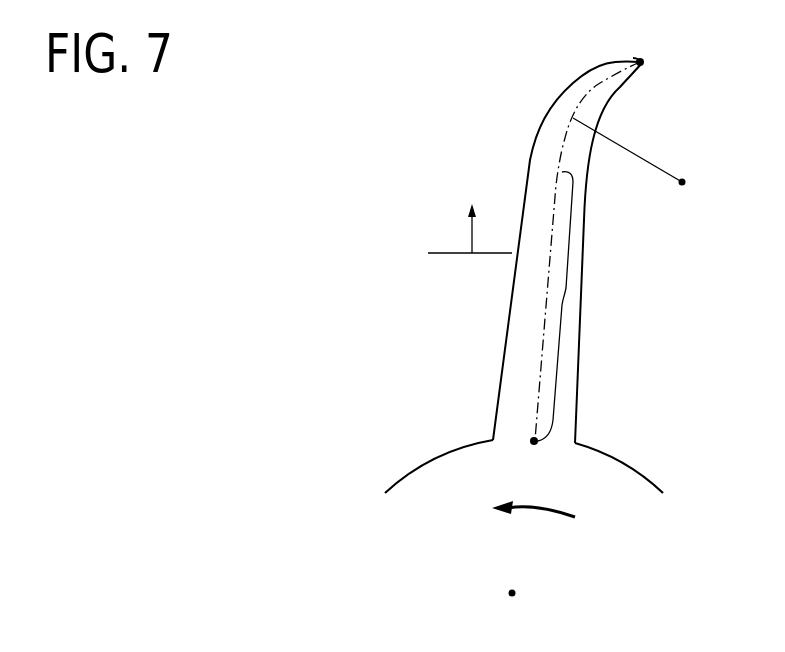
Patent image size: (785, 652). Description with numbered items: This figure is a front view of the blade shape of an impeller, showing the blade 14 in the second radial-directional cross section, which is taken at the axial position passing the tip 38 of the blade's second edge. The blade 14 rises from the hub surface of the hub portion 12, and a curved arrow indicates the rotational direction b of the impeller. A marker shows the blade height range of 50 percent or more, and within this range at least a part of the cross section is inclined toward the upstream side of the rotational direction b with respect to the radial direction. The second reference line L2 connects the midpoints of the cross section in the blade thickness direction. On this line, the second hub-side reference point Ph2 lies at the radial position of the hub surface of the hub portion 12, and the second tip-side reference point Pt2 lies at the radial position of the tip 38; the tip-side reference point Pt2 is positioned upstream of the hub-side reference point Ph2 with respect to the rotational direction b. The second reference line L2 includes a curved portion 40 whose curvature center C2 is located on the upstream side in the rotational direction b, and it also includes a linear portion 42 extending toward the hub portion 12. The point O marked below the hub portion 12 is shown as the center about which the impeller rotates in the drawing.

The hub portion 12 is at (600, 450).
The blade 14 is at (590, 238).
The tip 38 is at (645, 70).
The curved portion 40 is at (565, 138).
The linear portion 42 is at (566, 292).
The second tip-side reference point Pt2 is at (641, 62).
The second hub-side reference point Ph2 is at (533, 442).
The curvature center C2 is at (645, 161).
The second reference line L2 is at (543, 295).
The blade height range of 50% or more 50 is at (438, 237).
The rotational direction b is at (533, 495).
The rotation axis O is at (512, 593).